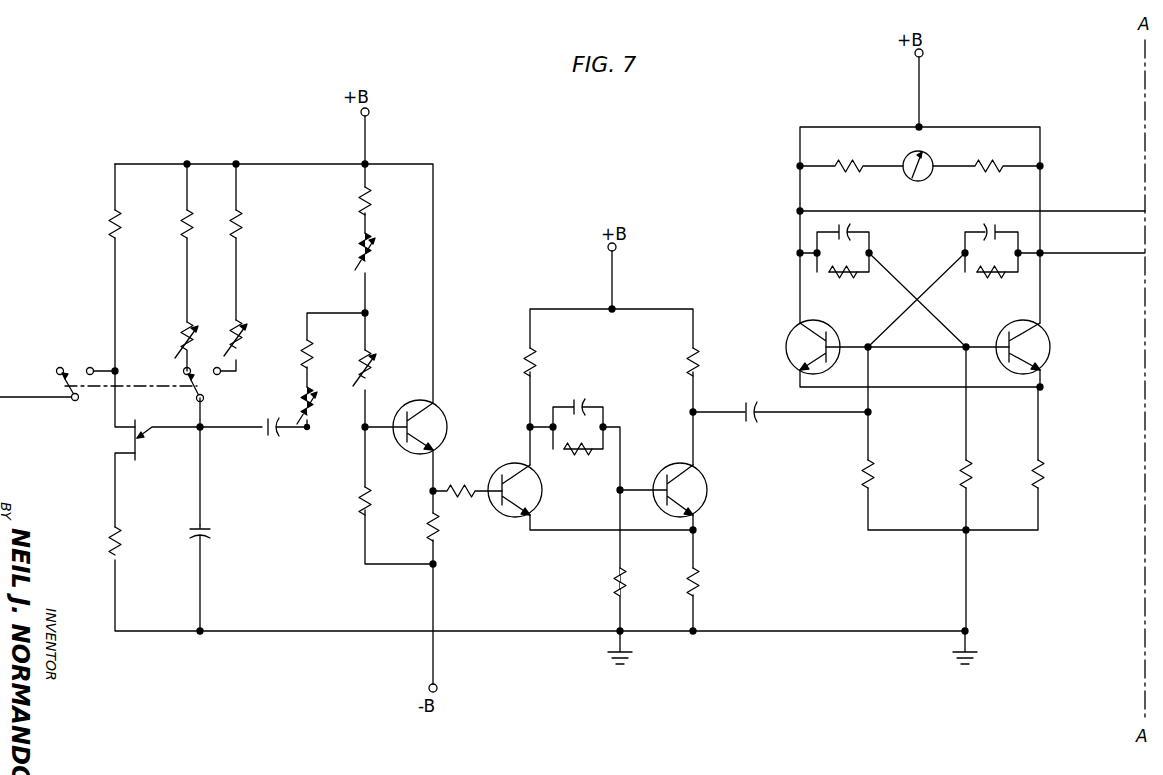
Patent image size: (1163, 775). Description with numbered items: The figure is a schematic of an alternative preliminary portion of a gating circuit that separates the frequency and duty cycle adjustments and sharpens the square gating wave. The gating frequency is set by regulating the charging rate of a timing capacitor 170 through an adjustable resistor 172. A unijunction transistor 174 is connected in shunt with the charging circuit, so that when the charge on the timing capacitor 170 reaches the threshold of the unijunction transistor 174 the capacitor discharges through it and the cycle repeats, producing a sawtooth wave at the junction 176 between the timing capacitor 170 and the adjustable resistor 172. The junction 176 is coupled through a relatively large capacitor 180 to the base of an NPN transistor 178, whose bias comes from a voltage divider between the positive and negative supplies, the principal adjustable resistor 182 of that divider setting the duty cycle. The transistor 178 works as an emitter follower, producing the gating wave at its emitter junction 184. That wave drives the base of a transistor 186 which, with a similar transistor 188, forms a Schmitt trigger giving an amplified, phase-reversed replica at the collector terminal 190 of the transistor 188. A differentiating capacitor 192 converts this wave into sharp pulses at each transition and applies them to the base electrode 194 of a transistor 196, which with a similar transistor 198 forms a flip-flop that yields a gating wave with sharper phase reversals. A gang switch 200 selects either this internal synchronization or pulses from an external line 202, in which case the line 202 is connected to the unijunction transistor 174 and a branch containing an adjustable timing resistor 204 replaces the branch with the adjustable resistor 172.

The timing capacitor 170 is at (213, 534).
The adjustable resistor 172 is at (181, 333).
The unijunction transistor 174 is at (128, 440).
The junction 176 is at (204, 430).
The transistor 178 is at (437, 421).
The capacitor 180 is at (279, 441).
The adjustable resistor 182 is at (378, 372).
The emitter junction 184 is at (430, 493).
The transistor 186 is at (530, 498).
The transistor 188 is at (695, 498).
The collector terminal 190 is at (690, 410).
The differentiating capacitor 192 is at (751, 424).
The base electrode 194 is at (871, 350).
The transistor 196 is at (790, 340).
The transistor 198 is at (1045, 340).
The gang switch 200 is at (130, 386).
The line 202 is at (19, 395).
The adjustable timing resistor 204 is at (245, 350).